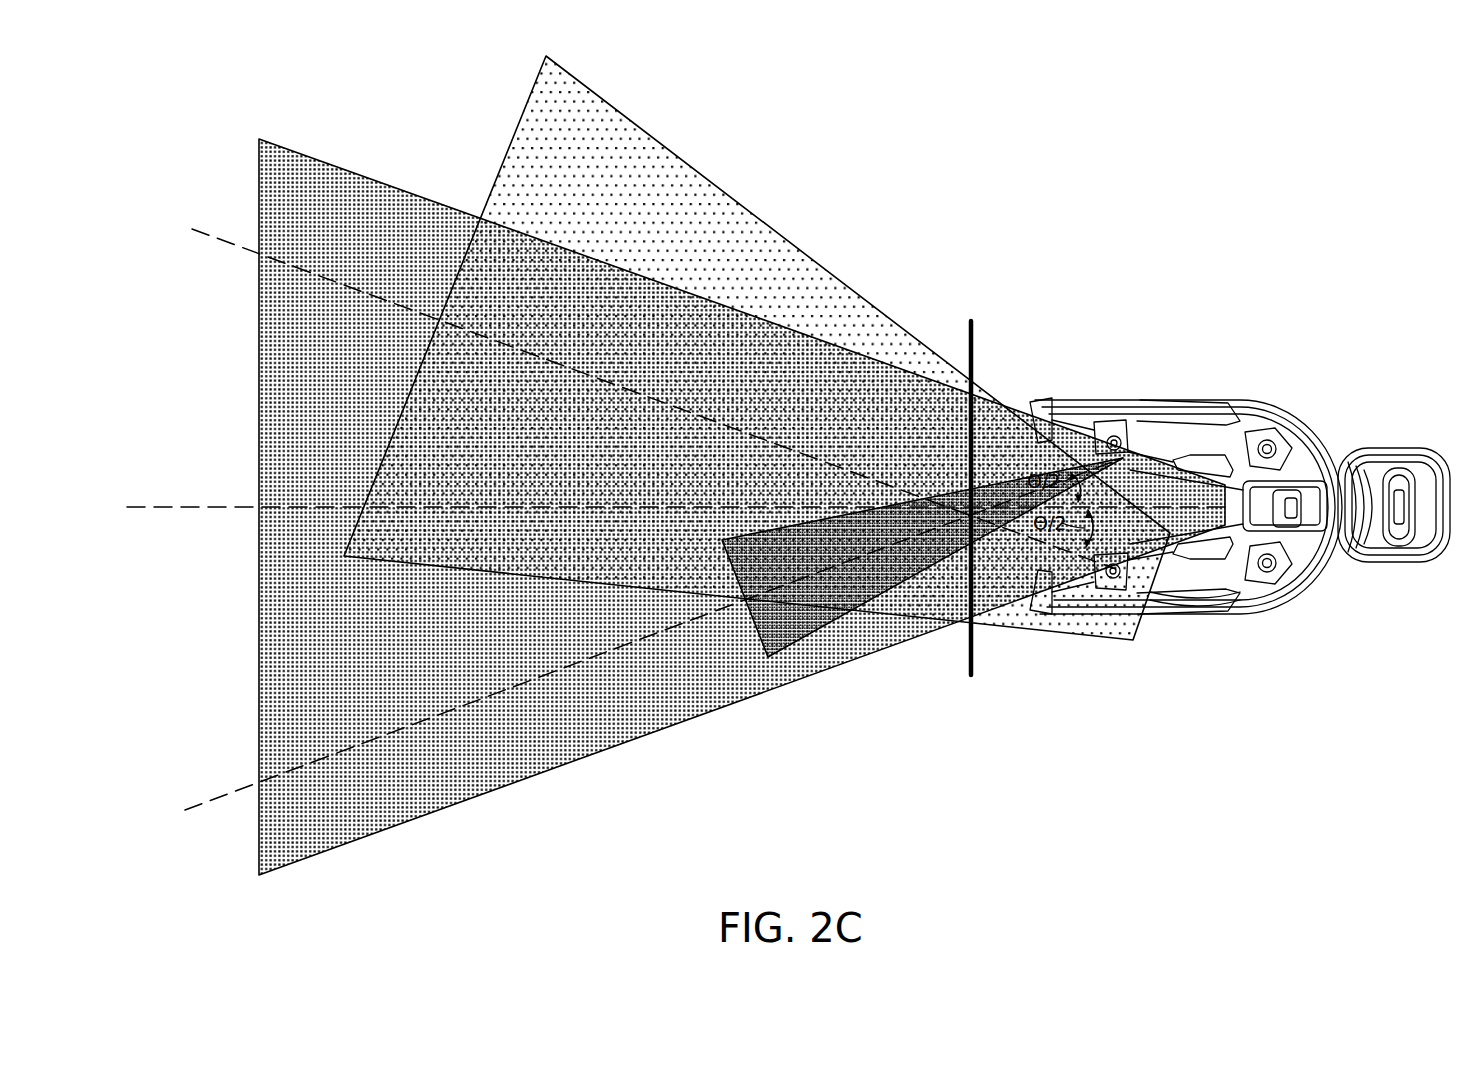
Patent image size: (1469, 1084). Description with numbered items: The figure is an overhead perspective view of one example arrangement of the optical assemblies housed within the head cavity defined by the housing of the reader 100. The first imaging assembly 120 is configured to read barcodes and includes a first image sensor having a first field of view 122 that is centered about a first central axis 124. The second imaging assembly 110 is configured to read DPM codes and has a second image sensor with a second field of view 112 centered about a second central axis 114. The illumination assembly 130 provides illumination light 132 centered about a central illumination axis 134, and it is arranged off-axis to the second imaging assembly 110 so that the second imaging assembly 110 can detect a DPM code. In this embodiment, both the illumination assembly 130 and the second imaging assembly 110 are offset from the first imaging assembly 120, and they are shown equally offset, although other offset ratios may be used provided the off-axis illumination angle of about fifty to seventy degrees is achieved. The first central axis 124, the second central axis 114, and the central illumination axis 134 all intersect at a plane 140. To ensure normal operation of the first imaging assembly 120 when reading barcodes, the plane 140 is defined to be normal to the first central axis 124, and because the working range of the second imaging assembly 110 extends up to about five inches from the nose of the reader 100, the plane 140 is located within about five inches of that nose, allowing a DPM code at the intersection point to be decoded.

The reader 100 is at (1335, 448).
The second imaging assembly 110 is at (1115, 436).
The second field of view 112 is at (1046, 434).
The second central axis 114 is at (205, 801).
The first imaging assembly 120 is at (1262, 582).
The first field of view 122 is at (1212, 562).
The first central axis 124 is at (207, 514).
The illumination assembly 130 is at (1150, 600).
The illumination light 132 is at (1072, 617).
The central illumination axis 134 is at (205, 237).
The plane 140 is at (967, 332).